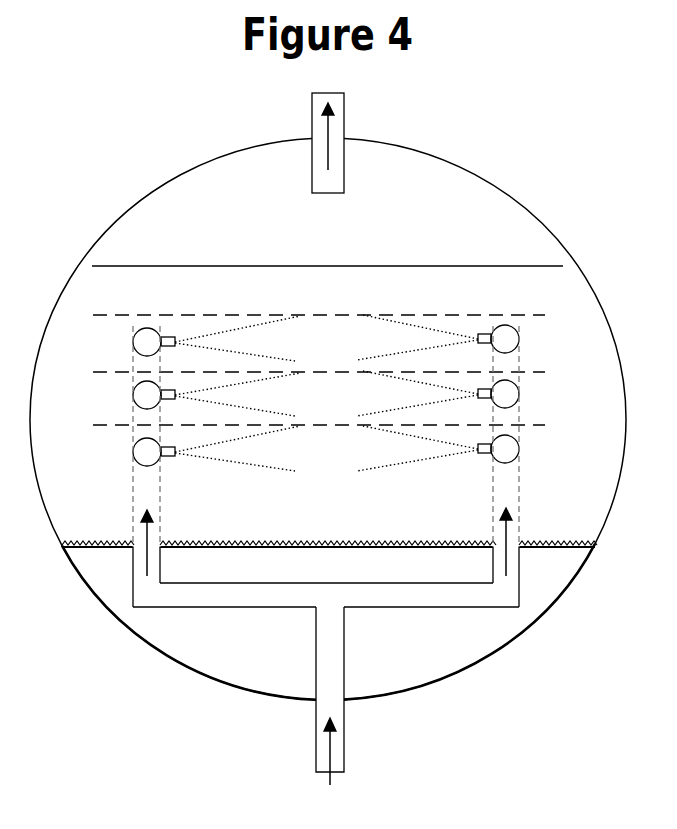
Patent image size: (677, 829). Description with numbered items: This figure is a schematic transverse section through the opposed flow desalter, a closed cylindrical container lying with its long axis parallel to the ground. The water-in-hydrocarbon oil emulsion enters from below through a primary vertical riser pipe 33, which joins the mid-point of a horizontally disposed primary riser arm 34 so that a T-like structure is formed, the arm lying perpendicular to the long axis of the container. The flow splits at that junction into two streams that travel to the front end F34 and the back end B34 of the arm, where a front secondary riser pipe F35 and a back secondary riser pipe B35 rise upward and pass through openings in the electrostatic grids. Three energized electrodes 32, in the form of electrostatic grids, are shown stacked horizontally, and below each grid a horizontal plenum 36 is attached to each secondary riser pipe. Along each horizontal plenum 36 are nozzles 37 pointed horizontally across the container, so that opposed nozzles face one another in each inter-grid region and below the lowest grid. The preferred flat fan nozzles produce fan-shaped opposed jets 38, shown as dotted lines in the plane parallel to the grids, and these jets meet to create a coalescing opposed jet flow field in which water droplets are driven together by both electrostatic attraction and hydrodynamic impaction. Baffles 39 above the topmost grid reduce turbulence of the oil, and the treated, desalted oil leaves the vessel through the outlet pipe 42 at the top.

The outlet pipe 42 is at (346, 96).
The baffles 39 is at (196, 260).
The energized electrodes 32 is at (110, 320).
The nozzles 37 is at (183, 304).
The horizontal plenums 36 is at (520, 341).
The fan-shaped jet 38 is at (298, 386).
The front secondary riser pipe F35 is at (166, 531).
The back secondary riser pipe B35 is at (524, 529).
The primary riser arm 34 is at (270, 564).
The front end of primary riser arm F34 is at (128, 606).
The back end of primary riser arm B34 is at (470, 606).
The primary vertical riser pipe 33 is at (346, 745).